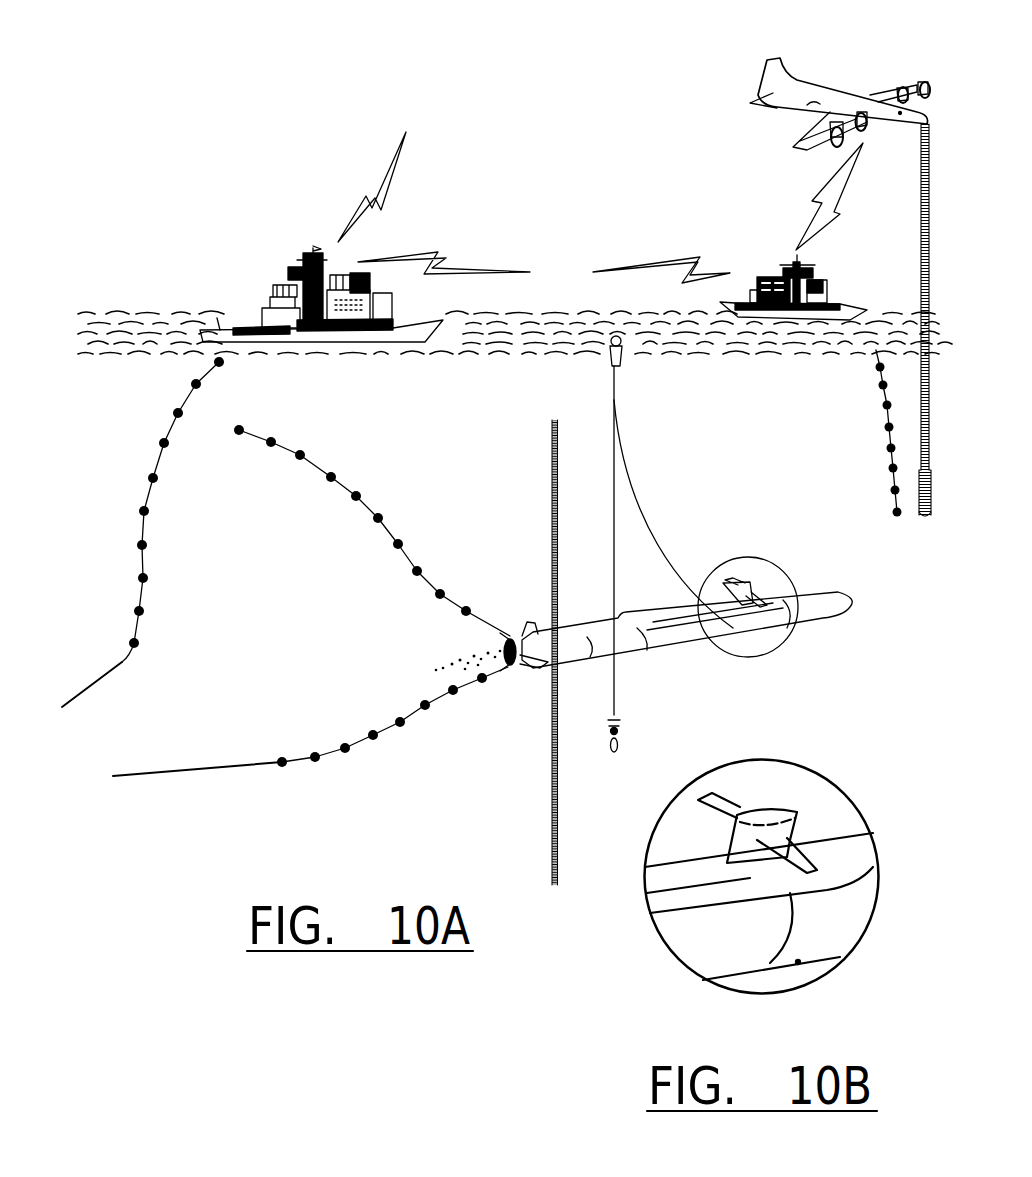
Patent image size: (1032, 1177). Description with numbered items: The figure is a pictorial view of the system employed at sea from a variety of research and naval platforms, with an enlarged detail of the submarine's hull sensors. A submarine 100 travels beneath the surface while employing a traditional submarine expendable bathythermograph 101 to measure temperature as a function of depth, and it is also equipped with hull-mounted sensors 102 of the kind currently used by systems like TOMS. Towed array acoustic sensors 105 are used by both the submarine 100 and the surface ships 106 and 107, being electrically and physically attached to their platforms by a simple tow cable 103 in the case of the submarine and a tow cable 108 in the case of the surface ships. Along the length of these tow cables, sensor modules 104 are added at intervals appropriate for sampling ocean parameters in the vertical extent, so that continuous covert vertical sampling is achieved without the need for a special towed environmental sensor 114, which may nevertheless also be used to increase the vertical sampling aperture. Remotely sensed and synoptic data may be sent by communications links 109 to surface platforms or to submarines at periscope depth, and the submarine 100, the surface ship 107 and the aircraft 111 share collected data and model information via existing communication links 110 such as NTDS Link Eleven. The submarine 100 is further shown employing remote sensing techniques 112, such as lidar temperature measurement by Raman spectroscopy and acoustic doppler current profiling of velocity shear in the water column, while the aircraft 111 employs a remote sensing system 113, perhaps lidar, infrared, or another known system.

In FIG. 10A, the submarine 100 is at (820, 627).
In FIG. 10A, the submarine expendable bathythermograph (SSXBT) 101 is at (647, 513).
In FIG. 10B, the hull-mounted sensors 102 is at (800, 813).
In FIG. 10A, the tow cable 103 is at (385, 733).
In FIG. 10A, the sensor modules 104 is at (356, 498).
In FIG. 10A, the towed array acoustic sensors 105 is at (95, 688).
In FIG. 10A, the surface ship 106 is at (265, 300).
In FIG. 10A, the surface ship 107 is at (866, 272).
In FIG. 10A, the tow cable 108 is at (160, 458).
In FIG. 10A, the communications links 109 is at (383, 173).
In FIG. 10A, the communication links 110 is at (610, 215).
In FIG. 10A, the aircraft 111 is at (768, 58).
In FIG. 10A, the remote sensing techniques 112 is at (552, 483).
In FIG. 10A, the remote sensing system 113 is at (925, 518).
In FIG. 10A, the towed environmental sensor 114 is at (316, 465).